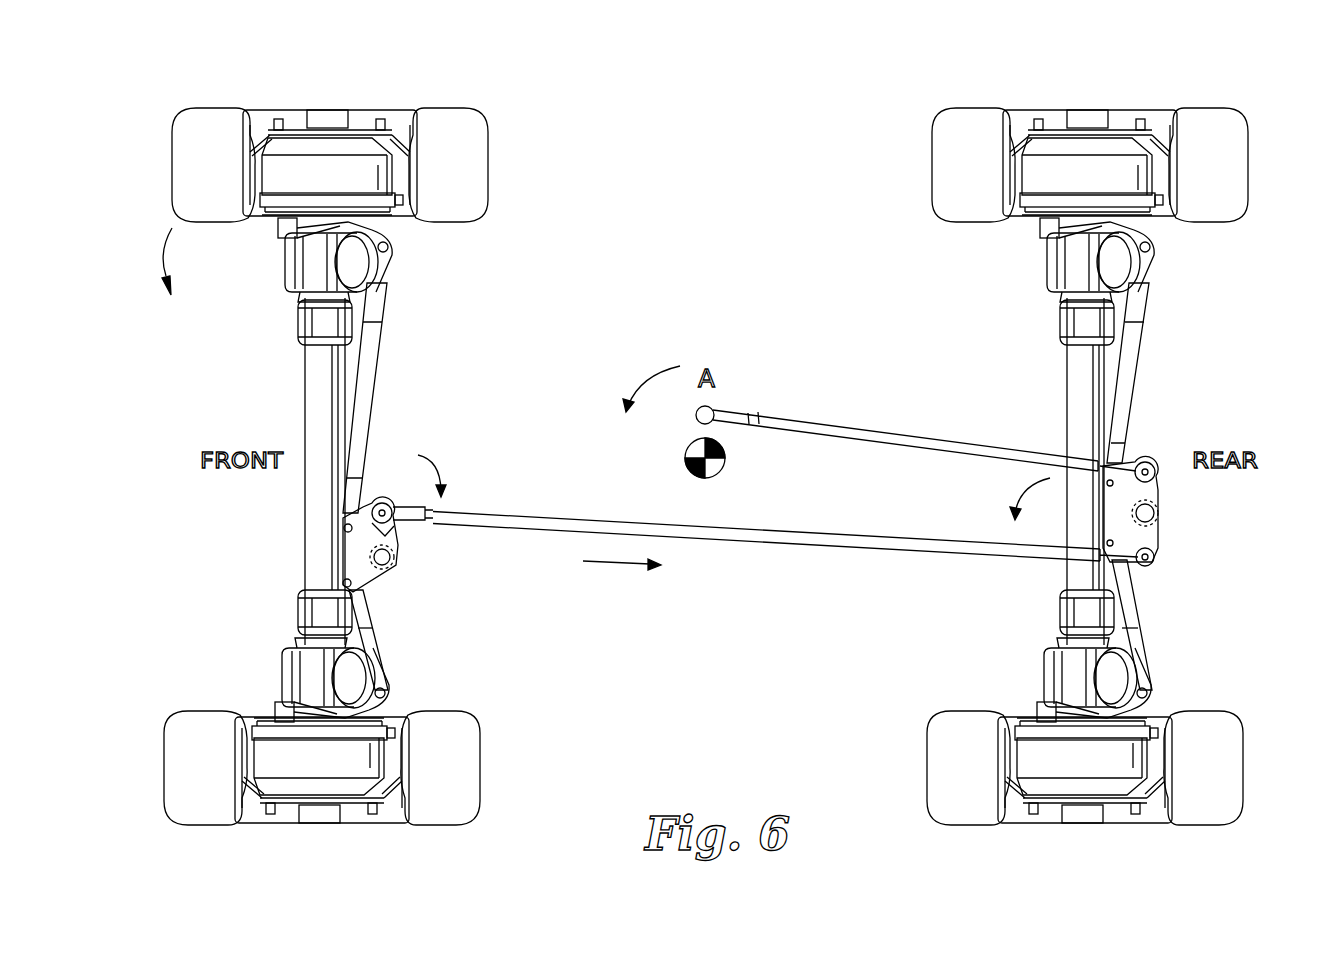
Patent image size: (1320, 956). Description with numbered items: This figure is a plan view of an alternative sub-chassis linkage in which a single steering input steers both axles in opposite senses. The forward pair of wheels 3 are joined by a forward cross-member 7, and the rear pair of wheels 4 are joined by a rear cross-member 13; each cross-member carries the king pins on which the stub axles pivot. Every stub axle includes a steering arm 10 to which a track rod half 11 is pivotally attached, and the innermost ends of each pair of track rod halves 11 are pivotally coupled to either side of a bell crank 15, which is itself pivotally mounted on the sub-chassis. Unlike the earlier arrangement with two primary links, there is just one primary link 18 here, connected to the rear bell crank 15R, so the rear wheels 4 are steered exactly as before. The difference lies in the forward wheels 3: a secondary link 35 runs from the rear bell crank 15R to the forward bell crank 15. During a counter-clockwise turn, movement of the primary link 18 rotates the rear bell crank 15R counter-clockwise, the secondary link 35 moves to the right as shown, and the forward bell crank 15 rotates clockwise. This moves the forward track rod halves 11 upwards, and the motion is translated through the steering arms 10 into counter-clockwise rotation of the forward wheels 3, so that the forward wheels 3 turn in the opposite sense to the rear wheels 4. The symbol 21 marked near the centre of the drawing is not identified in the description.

The forward wheels 3 is at (203, 126).
The rear wheels 4 is at (1225, 212).
The forward cross-member 7 is at (317, 423).
The steering arm 10 is at (386, 233).
The track rod half 11 is at (368, 370).
The rear cross-member 13 is at (1078, 380).
The bell crank 15 is at (347, 540).
The rear bell crank 15R is at (1160, 502).
The primary link 18 is at (809, 426).
The center of gravity 21 is at (722, 473).
The secondary link 35 is at (766, 542).